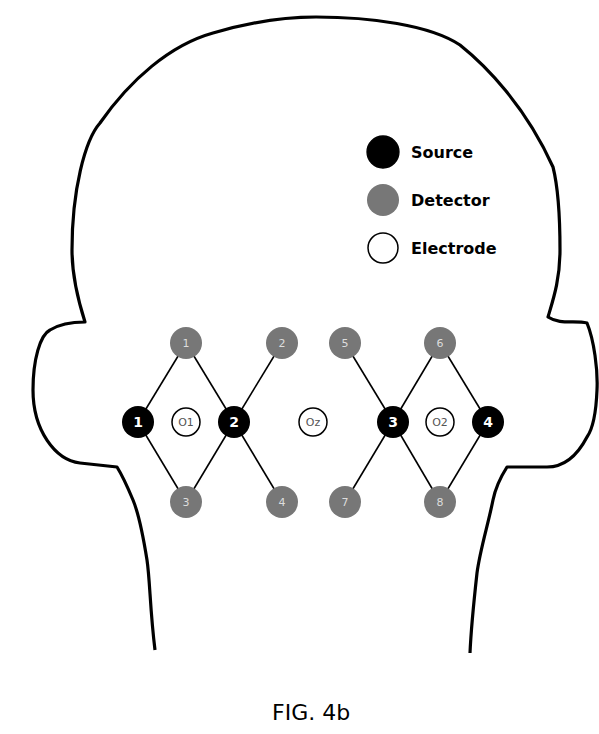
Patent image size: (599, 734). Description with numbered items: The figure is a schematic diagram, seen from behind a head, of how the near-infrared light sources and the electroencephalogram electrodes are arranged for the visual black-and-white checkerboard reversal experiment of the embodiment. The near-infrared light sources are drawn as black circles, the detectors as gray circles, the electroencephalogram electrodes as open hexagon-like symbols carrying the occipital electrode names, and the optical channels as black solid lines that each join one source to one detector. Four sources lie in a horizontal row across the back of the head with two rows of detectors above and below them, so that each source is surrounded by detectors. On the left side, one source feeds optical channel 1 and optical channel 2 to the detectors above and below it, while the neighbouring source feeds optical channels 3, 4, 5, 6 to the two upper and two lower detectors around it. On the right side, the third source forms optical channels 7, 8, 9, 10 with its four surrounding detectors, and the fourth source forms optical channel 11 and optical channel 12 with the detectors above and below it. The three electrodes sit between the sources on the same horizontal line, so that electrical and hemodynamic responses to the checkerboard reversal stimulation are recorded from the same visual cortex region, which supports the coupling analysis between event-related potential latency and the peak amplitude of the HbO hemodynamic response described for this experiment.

The optical channel 1 is at (162, 382).
The optical channel 2 is at (162, 462).
The optical channel 3 is at (210, 382).
The optical channel 4 is at (258, 382).
The optical channel 5 is at (210, 462).
The optical channel 6 is at (258, 462).
The optical channel 7 is at (416, 382).
The optical channel 8 is at (369, 382).
The optical channel 9 is at (416, 462).
The optical channel 10 is at (369, 462).
The optical channel 11 is at (465, 382).
The optical channel 12 is at (465, 462).